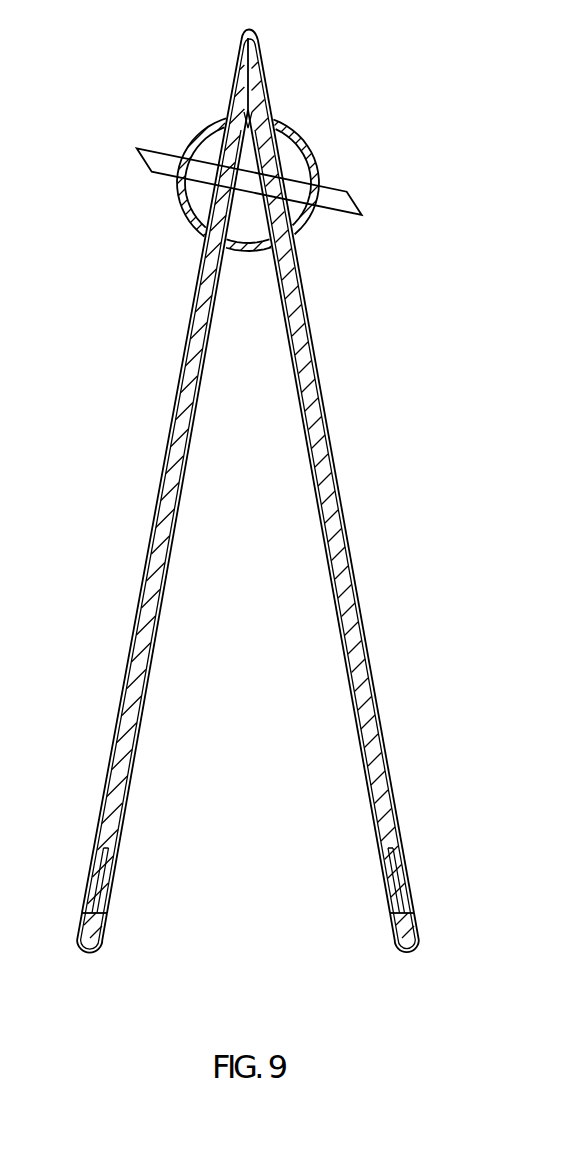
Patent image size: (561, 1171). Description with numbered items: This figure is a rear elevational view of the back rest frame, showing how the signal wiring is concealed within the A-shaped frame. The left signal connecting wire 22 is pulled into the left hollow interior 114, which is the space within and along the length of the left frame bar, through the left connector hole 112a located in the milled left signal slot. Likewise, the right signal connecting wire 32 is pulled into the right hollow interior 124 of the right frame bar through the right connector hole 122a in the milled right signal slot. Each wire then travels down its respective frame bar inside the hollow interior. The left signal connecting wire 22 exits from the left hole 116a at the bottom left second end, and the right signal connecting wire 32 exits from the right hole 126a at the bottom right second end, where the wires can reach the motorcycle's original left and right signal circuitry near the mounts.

The right hollow interior 124 is at (186, 403).
The left hollow interior 114 is at (327, 439).
The right connector hole 122a is at (100, 840).
The left connector hole 112a is at (397, 853).
The right signal connecting wire 32 is at (107, 913).
The left signal connecting wire 22 is at (390, 913).
The right hole 126a is at (107, 920).
The left hole 116a is at (388, 920).